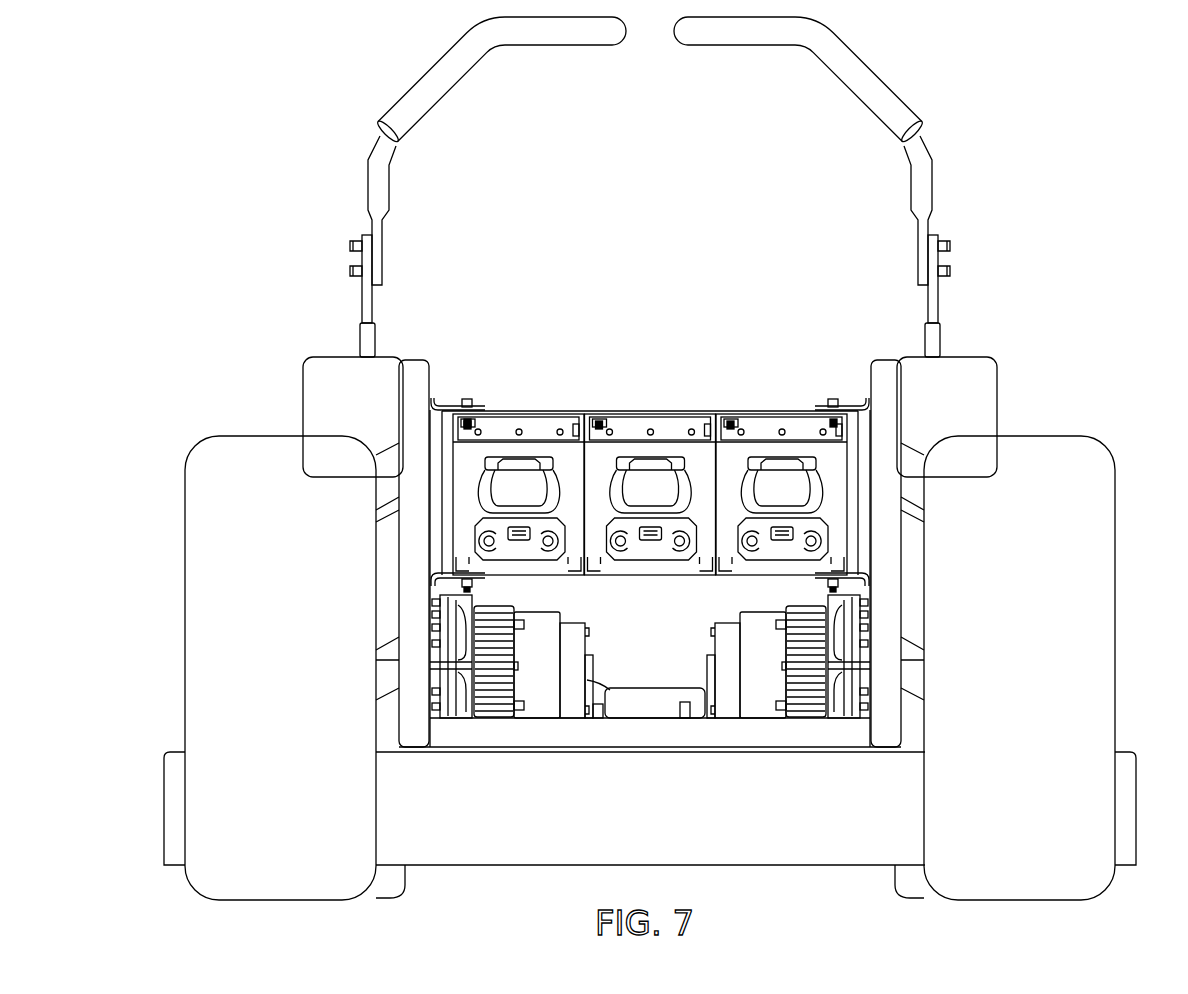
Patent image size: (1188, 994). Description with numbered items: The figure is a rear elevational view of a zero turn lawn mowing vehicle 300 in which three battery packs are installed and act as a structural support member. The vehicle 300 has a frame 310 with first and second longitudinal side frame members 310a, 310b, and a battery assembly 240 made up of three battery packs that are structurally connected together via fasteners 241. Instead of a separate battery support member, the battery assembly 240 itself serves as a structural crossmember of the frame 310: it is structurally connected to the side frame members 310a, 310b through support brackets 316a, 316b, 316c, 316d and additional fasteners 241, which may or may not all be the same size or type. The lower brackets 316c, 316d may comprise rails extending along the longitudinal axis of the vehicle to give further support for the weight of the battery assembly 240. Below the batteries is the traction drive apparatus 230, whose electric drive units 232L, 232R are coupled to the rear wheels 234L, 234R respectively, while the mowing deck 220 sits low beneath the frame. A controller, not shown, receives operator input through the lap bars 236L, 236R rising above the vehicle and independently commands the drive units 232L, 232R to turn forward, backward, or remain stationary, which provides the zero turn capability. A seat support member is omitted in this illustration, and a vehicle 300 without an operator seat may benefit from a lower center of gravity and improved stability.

The ZT lawn mowing vehicle 300 is at (148, 105).
The lap bar 236L is at (556, 37).
The lap bar 236R is at (744, 37).
The mowing deck 220 is at (672, 820).
The rear wheel 234L is at (310, 800).
The rear wheel 234R is at (1046, 800).
The vehicle frame 310 is at (445, 368).
The first longitudinal side frame member 310a is at (415, 366).
The second longitudinal side frame member 310b is at (885, 366).
The support bracket 316a is at (443, 407).
The support bracket 316b is at (857, 405).
The support bracket 316c is at (441, 572).
The support bracket 316d is at (859, 572).
The battery assembly 240 is at (660, 374).
The fastener 241 is at (470, 423).
The electric drive unit 232L is at (538, 695).
The electric drive unit 232R is at (763, 695).
The traction drive apparatus 230 is at (474, 778).